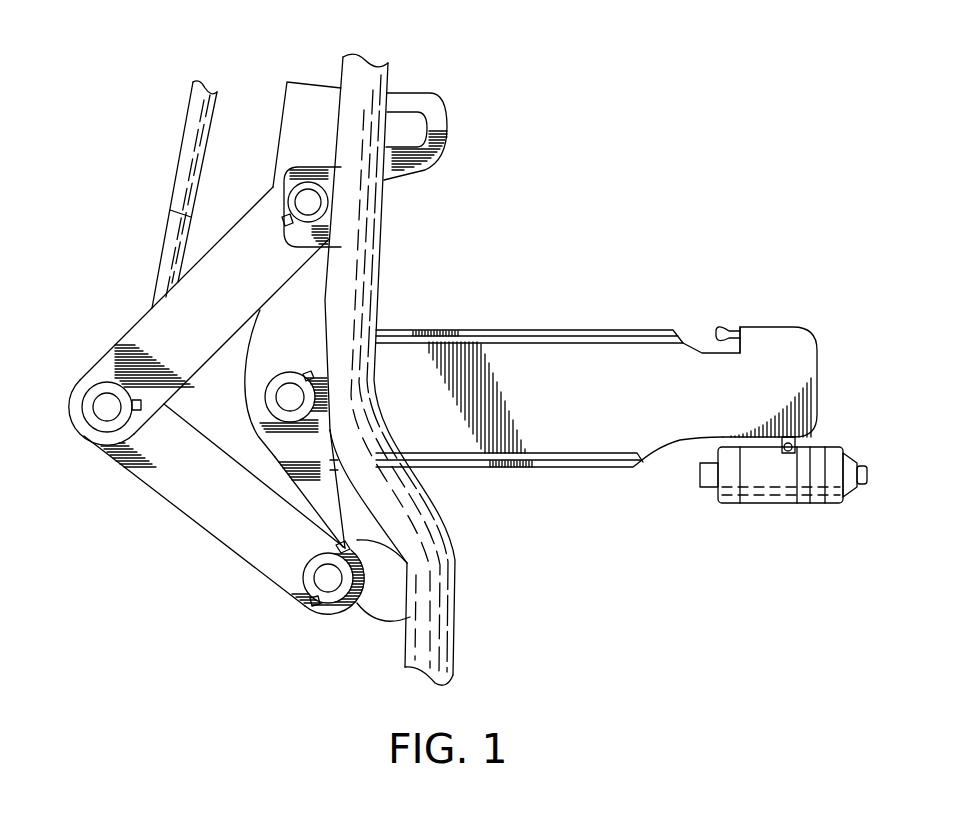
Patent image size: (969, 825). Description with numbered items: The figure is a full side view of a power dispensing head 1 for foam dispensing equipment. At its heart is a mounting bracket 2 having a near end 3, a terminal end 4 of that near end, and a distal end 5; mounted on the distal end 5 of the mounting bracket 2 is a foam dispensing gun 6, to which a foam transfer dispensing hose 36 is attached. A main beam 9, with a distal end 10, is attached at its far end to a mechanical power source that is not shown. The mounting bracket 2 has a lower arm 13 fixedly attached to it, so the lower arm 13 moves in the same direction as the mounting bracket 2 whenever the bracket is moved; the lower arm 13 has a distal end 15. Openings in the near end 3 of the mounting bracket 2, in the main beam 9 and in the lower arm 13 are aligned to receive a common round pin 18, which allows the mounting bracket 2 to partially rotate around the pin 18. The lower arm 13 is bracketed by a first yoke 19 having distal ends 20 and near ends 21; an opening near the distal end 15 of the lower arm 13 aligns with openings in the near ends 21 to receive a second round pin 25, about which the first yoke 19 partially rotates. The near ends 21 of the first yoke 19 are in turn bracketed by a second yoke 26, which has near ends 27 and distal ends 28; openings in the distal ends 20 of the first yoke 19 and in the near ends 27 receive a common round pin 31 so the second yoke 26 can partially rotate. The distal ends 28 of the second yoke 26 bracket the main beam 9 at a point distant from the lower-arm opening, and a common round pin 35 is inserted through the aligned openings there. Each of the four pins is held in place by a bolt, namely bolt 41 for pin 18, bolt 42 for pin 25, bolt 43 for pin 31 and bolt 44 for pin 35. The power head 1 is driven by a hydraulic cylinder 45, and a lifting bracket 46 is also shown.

The power dispensing head 1 is at (614, 195).
The mounting bracket 2 is at (602, 358).
The near end 3 is at (248, 434).
The terminal end 4 is at (243, 400).
The distal end 5 is at (817, 380).
The foam dispensing gun 6 is at (767, 493).
The main beam 9 is at (288, 108).
The distal end 10 is at (313, 447).
The lower arm 13 is at (327, 498).
The distal end 15 is at (357, 540).
The pin 18 is at (295, 398).
The first yoke 19 is at (213, 522).
The distal ends 20 is at (70, 381).
The near ends 21 is at (380, 623).
The second pin 25 is at (326, 583).
The second yoke 26 is at (234, 300).
The near ends 27 is at (108, 452).
The distal ends 28 is at (320, 164).
The pin 31 is at (100, 412).
The pin 35 is at (307, 198).
The foam transfer dispensing hose 36 is at (365, 213).
The bolt 41 is at (306, 374).
The bolt 42 is at (338, 548).
The bolt 43 is at (138, 382).
The bolt 44 is at (290, 222).
The hydraulic cylinder 45 is at (155, 253).
The lifting bracket 46 is at (445, 120).